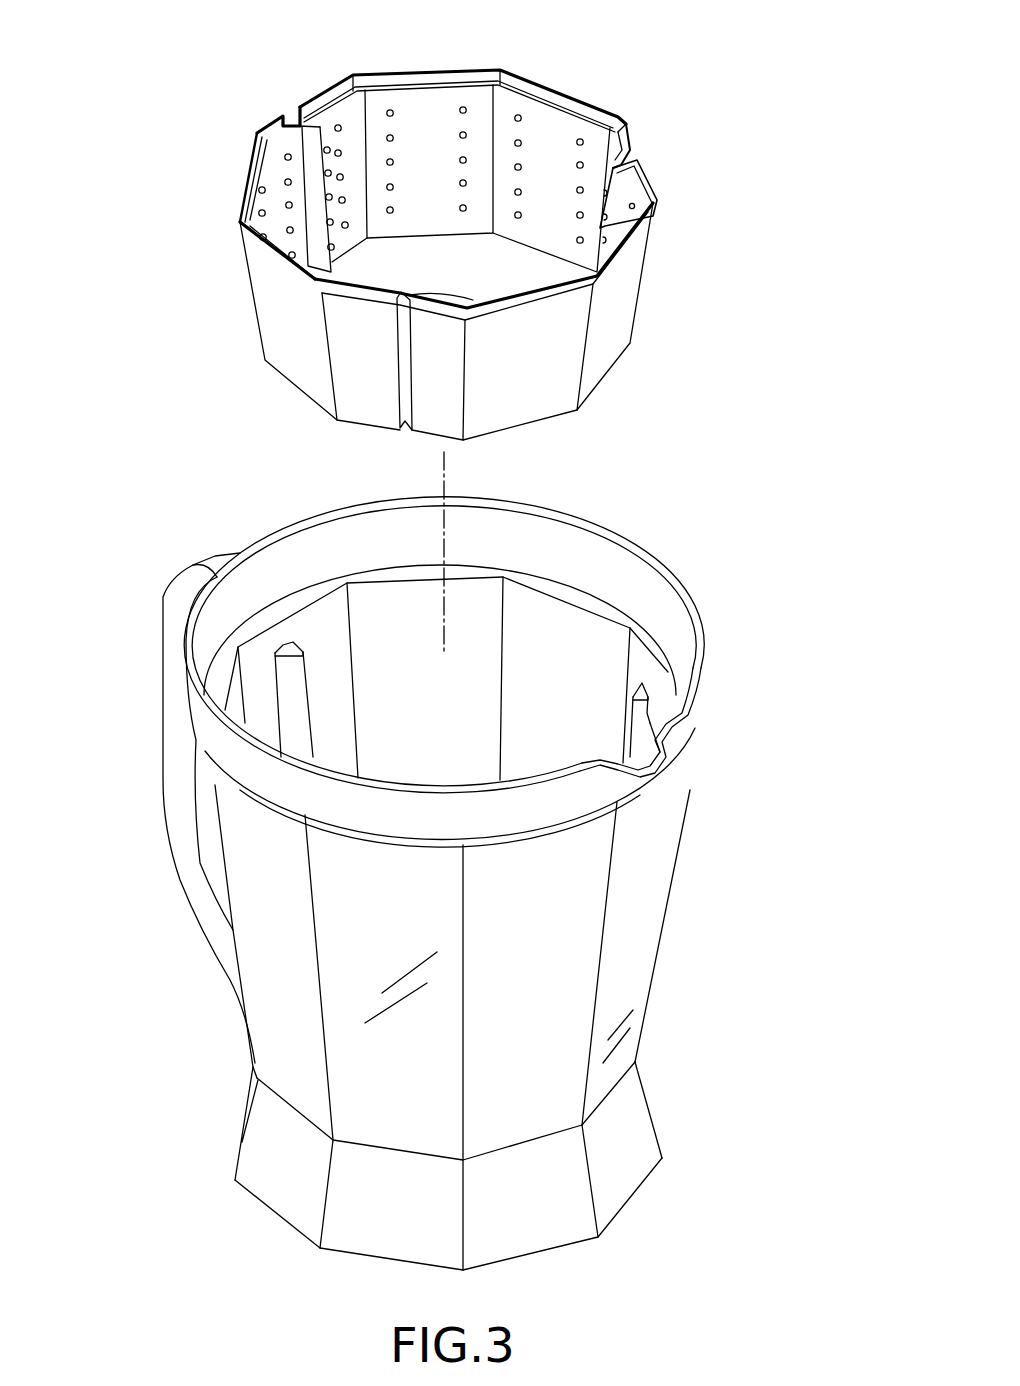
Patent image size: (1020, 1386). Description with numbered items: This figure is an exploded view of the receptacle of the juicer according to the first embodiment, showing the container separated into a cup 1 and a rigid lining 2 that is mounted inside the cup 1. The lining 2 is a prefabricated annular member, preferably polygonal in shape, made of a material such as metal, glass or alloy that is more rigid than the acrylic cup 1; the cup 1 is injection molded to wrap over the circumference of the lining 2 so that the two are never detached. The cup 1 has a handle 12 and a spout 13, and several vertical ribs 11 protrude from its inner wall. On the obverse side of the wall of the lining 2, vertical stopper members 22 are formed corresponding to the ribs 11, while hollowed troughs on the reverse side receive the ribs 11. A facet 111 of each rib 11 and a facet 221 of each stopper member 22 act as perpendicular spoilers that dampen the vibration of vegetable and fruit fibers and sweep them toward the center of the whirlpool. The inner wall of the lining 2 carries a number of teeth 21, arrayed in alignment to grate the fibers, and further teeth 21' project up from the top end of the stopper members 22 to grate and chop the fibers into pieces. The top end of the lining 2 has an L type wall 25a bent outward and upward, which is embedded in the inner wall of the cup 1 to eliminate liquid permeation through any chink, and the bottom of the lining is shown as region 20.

The cup 1 is at (672, 927).
The vertical ribs 11 is at (292, 643).
The facet of the rib 111 is at (300, 645).
The handle 12 is at (173, 607).
The spout 13 is at (647, 757).
The rigid lining 2 is at (580, 88).
The bottom of filter basket 20 is at (350, 282).
The teeth 21 is at (459, 119).
The teeth 21' is at (448, 186).
The vertical stopper members 22 is at (297, 132).
The facet of the stopper members 221 is at (323, 118).
The L type wall 25a is at (257, 133).